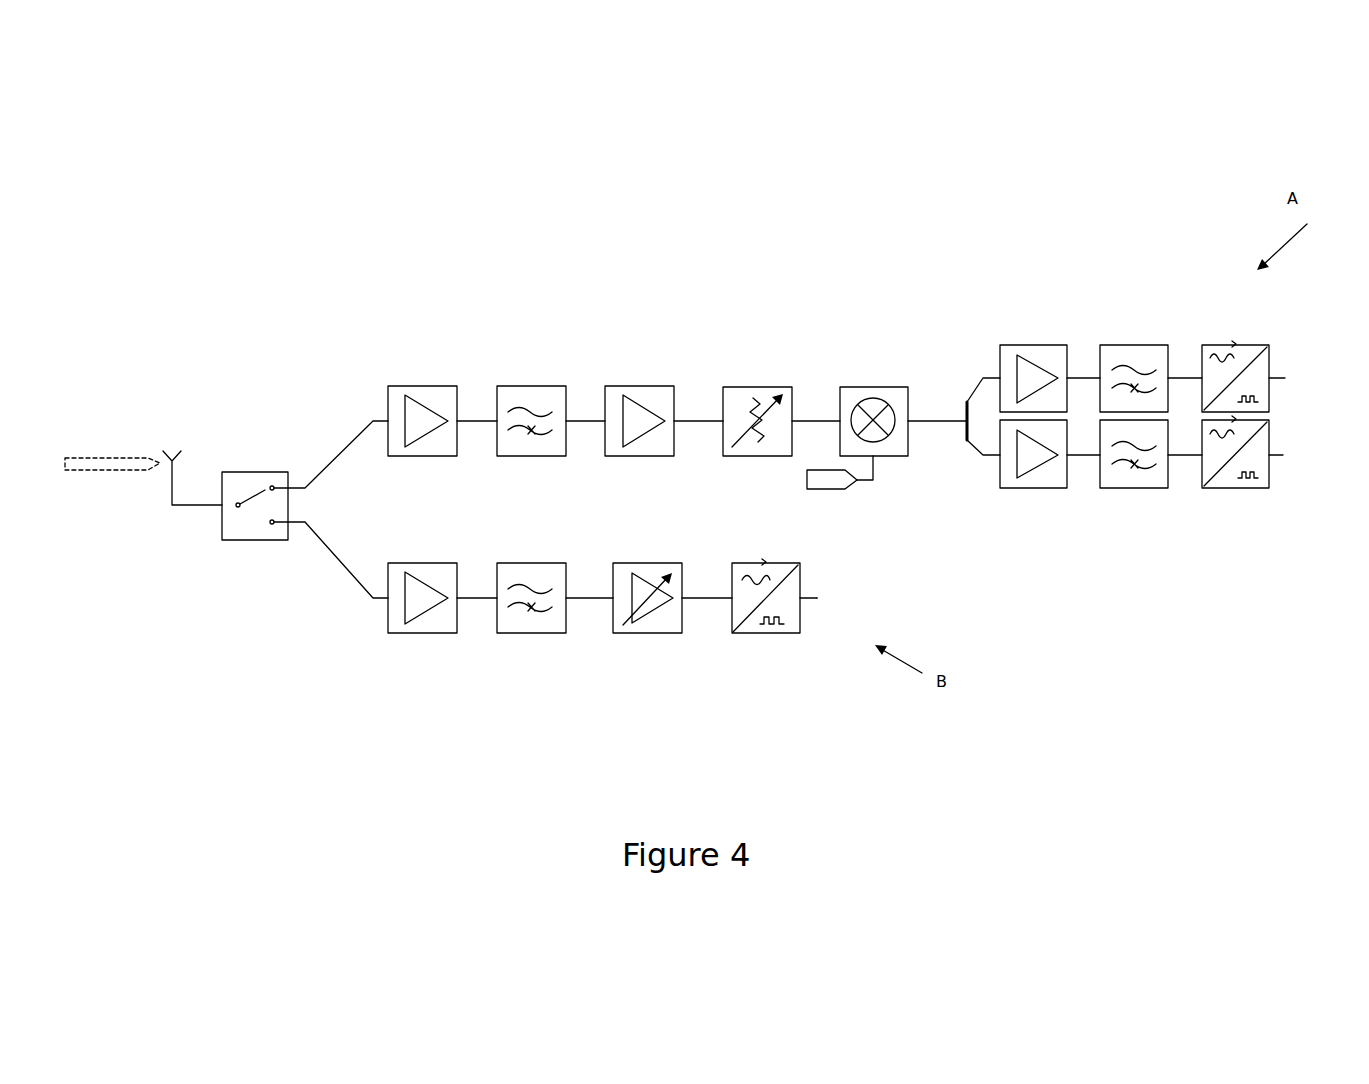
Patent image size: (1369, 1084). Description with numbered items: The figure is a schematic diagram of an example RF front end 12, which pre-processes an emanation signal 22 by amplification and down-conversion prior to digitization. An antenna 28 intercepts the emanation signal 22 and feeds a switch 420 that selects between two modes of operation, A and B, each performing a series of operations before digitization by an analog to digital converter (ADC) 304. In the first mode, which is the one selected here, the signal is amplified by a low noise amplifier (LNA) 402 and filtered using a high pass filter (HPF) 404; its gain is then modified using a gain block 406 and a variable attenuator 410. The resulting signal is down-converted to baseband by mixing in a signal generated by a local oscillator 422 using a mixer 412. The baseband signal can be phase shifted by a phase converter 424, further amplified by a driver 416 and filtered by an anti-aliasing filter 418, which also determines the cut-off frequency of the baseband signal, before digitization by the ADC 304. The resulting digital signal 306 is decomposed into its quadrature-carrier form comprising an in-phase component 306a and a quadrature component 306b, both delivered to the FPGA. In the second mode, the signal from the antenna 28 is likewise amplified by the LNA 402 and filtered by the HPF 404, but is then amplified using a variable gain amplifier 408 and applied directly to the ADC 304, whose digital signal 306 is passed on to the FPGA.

The RF front end 12 is at (897, 231).
The emanation signal 22 is at (93, 456).
The antenna 28 is at (180, 422).
The switch 420 is at (245, 540).
The low noise amplifier (LNA) 402 is at (438, 385).
The high pass filter (HPF) 404 is at (563, 385).
The gain block 406 is at (668, 385).
The variable attenuator 410 is at (792, 392).
The down-converter (mixer) 412 is at (898, 456).
The local oscillator 422 is at (828, 490).
The phase converter 424 is at (953, 383).
The driver 416 is at (1067, 350).
The anti-aliasing filter 418 is at (1168, 350).
The analog to digital converter (ADC) 304 is at (1269, 350).
The variable gain amplifier 408 is at (637, 633).
The in-phase component 306a is at (1285, 379).
The quadrature component 306b is at (1283, 456).
The digital signal 306 is at (808, 600).